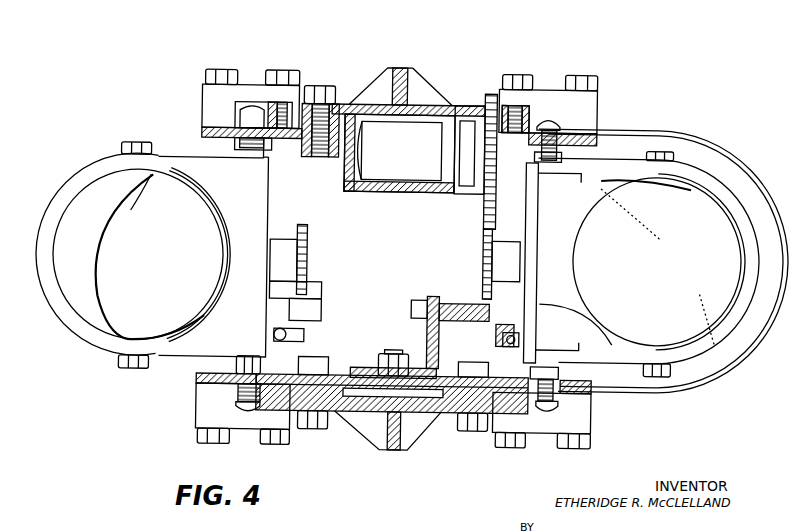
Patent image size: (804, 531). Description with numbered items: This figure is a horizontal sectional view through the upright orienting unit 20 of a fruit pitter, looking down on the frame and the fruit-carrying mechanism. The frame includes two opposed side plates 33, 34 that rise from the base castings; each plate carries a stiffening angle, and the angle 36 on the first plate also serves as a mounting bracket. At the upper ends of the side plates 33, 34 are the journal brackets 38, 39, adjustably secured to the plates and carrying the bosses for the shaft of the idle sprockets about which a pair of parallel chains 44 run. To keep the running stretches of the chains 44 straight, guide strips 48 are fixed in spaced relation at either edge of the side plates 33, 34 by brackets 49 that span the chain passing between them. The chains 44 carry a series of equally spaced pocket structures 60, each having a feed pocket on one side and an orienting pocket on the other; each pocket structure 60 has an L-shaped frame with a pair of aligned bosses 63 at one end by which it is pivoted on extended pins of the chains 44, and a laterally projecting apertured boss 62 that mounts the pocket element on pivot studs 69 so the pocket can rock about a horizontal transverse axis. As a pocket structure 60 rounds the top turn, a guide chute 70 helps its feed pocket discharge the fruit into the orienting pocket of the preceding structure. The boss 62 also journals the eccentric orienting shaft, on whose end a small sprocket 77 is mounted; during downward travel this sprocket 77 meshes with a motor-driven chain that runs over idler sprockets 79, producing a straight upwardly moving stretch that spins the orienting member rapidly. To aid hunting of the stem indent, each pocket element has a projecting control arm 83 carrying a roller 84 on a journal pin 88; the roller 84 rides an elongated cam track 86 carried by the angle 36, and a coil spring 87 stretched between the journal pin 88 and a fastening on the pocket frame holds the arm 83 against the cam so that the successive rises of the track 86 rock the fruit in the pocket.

The orienting unit 20 is at (368, 36).
The side plate 33 is at (338, 376).
The side plate 34 is at (300, 145).
The stiffening angle 36 is at (440, 340).
The journal bracket 38 is at (405, 447).
The journal bracket 39 is at (417, 84).
The chain 44 is at (545, 118).
The guide strip 48 is at (200, 136).
The bracket 49 is at (201, 100).
The pocket structure 60 is at (55, 335).
The laterally projecting apertured portion or boss 62 is at (44, 285).
The aligned bosses 63 is at (236, 150).
The pivot pin or stud 69 is at (142, 128).
The guide chute 70 is at (662, 130).
The sprocket 77 is at (308, 250).
The idler sprocket 79 is at (483, 210).
The control arm 83 is at (318, 288).
The roller 84 is at (322, 308).
The cam member or track 86 is at (475, 303).
The coil spring 87 is at (290, 340).
The journal pin 88 is at (502, 345).